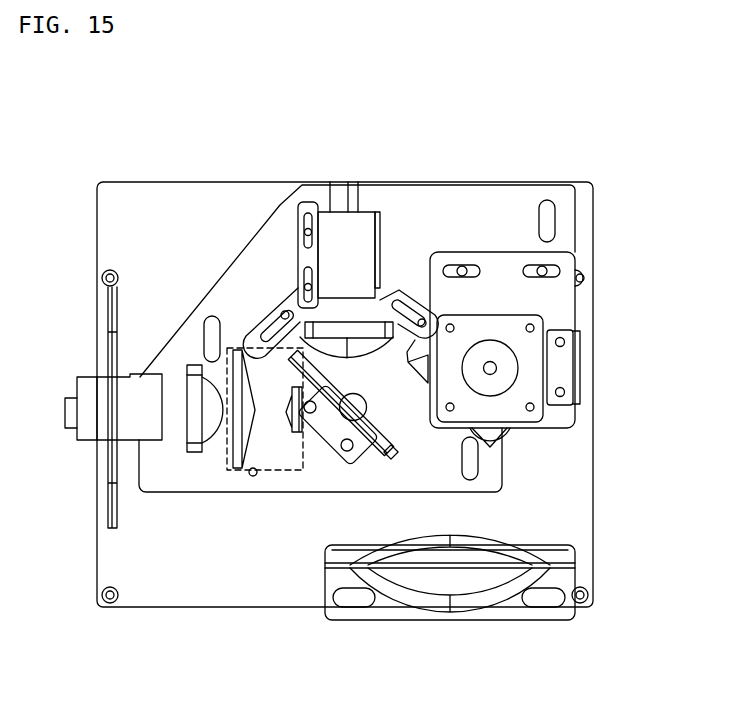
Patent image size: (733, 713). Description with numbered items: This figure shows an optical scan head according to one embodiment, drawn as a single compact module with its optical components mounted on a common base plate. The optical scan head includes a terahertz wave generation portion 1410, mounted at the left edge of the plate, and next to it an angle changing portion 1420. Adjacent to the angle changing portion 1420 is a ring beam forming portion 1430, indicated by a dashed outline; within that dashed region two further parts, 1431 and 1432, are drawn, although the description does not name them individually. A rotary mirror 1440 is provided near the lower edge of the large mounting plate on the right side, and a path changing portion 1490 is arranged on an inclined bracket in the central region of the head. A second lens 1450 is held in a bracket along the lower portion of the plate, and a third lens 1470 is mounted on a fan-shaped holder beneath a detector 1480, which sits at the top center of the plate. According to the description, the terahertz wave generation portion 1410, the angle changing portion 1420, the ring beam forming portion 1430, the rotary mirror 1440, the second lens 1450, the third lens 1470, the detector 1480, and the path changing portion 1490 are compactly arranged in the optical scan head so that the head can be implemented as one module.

The terahertz wave generation portion 1410 is at (87, 383).
The angle changing portion 1420 is at (198, 368).
The ring beam forming portion 1430 is at (232, 345).
The prism 1431 is at (233, 478).
The lens 1432 is at (293, 432).
The rotary mirror 1440 is at (500, 437).
The second lens 1450 is at (505, 540).
The third lens 1470 is at (377, 325).
The detector 1480 is at (365, 222).
The path changing portion 1490 is at (392, 452).